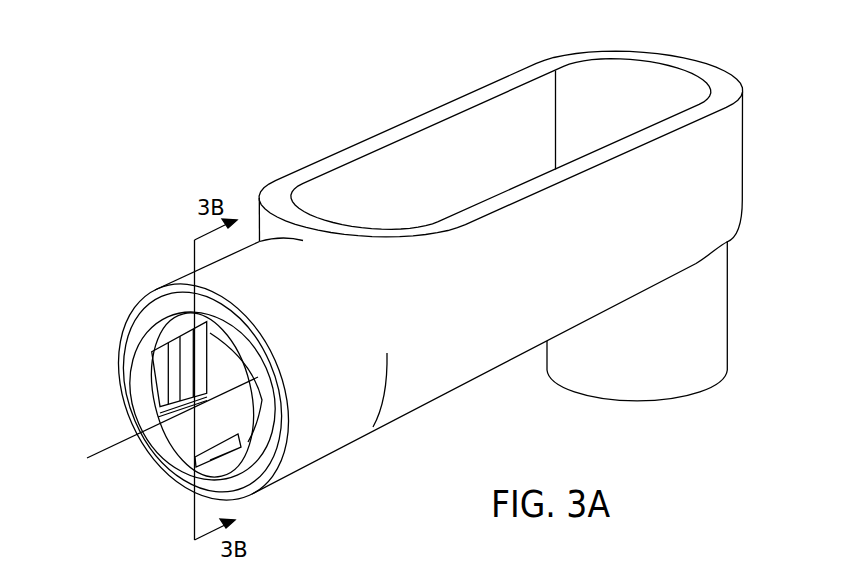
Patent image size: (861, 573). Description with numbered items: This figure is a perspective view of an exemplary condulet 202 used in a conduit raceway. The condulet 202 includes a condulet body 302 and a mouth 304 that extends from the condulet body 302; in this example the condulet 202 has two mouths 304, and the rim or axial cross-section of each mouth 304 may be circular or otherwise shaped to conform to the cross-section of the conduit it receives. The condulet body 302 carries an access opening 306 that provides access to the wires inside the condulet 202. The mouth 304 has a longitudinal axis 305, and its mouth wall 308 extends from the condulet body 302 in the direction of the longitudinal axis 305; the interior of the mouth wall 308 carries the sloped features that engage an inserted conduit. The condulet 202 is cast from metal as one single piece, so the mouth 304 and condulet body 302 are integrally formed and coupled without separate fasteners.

The condulet 202 is at (244, 146).
The condulet body 302 is at (712, 163).
The mouth 304 is at (305, 443).
The longitudinal axis 305 is at (110, 443).
The access opening 306 is at (633, 77).
The mouth wall 308 is at (350, 382).